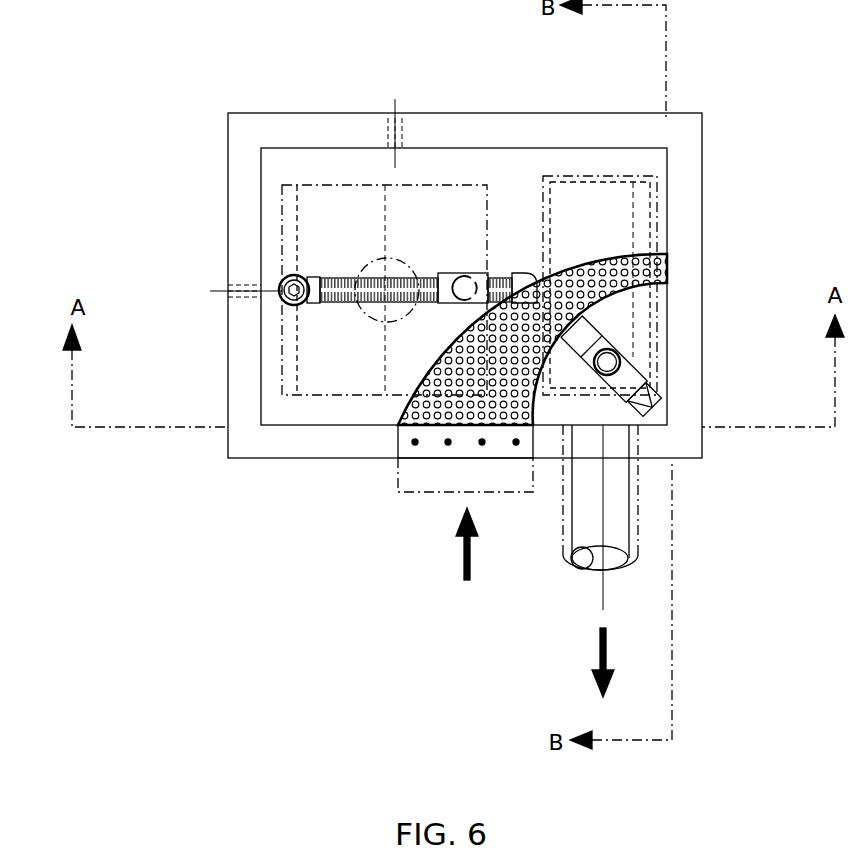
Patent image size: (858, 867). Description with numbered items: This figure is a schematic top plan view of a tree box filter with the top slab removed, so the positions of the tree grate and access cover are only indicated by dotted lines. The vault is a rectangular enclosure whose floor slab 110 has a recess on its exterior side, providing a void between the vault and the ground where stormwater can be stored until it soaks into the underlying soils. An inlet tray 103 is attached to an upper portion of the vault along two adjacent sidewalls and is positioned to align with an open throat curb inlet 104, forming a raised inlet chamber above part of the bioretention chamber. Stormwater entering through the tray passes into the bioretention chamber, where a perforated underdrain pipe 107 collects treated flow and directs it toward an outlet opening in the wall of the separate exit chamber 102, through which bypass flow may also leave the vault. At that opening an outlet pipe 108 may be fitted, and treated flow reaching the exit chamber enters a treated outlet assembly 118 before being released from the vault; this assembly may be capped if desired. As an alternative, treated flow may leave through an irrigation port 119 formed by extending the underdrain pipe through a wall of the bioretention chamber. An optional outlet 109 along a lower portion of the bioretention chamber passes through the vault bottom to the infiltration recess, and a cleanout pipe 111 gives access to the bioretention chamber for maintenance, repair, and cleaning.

The exit chamber 102 is at (632, 292).
The inlet tray 103 is at (598, 255).
The open throat curb inlet 104 is at (467, 458).
The perforated underdrain pipe 107 is at (343, 277).
The outlet pipe 108 is at (630, 507).
The outlet 109 is at (435, 303).
The floor slab 110 is at (328, 393).
The cleanout pipe 111 is at (287, 282).
The treated outlet assembly 118 is at (640, 357).
The irrigation port 119 is at (228, 285).